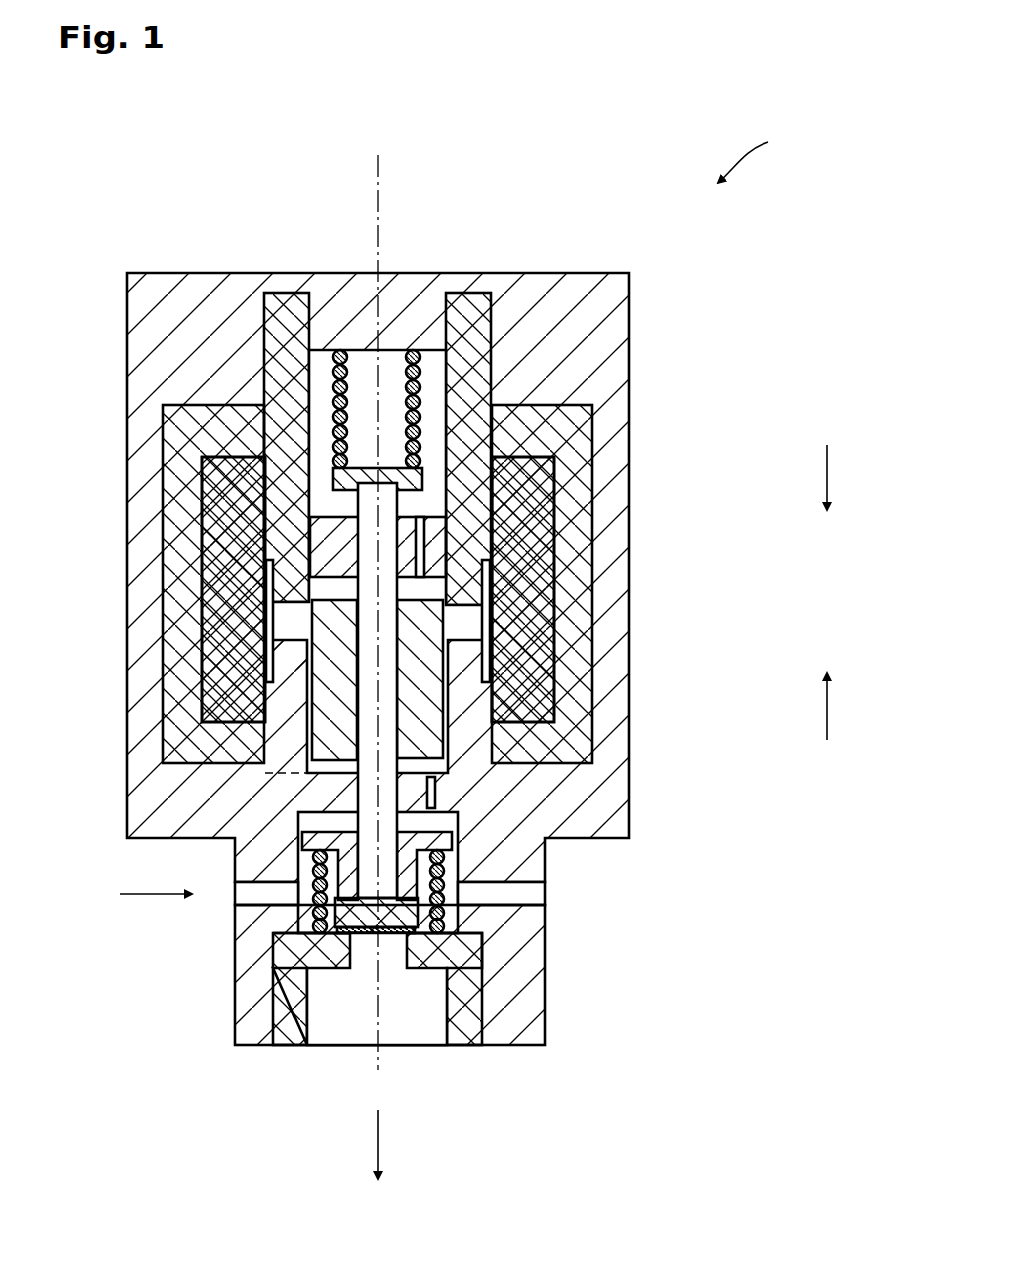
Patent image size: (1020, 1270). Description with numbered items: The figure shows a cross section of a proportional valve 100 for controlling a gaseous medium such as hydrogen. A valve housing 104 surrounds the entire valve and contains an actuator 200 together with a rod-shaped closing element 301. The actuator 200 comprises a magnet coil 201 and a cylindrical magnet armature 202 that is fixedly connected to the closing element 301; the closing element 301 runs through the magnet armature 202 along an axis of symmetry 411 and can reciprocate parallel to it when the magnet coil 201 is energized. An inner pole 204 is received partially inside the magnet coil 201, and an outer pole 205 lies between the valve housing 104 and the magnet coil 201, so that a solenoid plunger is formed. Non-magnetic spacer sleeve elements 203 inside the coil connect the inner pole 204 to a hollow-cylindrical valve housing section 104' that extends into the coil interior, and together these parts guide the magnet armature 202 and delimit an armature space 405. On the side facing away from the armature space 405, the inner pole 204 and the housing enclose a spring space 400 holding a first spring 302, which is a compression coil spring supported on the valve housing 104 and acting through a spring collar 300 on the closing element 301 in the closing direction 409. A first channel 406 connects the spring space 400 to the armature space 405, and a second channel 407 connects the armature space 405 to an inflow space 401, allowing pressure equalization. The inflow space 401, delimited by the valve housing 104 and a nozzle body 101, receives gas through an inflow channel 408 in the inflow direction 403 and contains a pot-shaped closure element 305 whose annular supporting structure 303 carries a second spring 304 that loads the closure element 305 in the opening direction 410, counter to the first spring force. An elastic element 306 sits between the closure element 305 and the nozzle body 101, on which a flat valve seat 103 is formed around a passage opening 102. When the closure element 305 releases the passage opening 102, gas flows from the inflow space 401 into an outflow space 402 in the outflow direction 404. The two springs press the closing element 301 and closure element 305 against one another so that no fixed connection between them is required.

The proportional valve 100 is at (769, 153).
The nozzle body 101 is at (292, 1035).
The passage opening 102 is at (360, 963).
The valve seat 103 is at (460, 955).
The valve housing 104 is at (333, 577).
The valve housing section 104' is at (379, 711).
The actuator 200 is at (488, 589).
The magnet coil 201 is at (535, 510).
The magnet armature 202 is at (420, 695).
The spacer sleeve elements 203 is at (270, 640).
The inner pole 204 is at (480, 386).
The outer pole 205 is at (585, 455).
The spring collar 300 is at (366, 470).
The closing element 301 is at (367, 792).
The first spring 302 is at (432, 375).
The supporting structure 303 is at (315, 848).
The second spring 304 is at (450, 855).
The closure element 305 is at (410, 915).
The elastic element 306 is at (388, 932).
The spring space 400 is at (332, 505).
The inflow space 401 is at (447, 840).
The outflow space 402 is at (425, 1008).
The inflow direction 403 is at (152, 896).
The outflow direction 404 is at (383, 1150).
The armature space 405 is at (327, 588).
The first channel 406 is at (420, 558).
The second channel 407 is at (430, 797).
The inflow channel 408 is at (243, 893).
The closing direction 409 is at (832, 478).
The opening direction 410 is at (832, 710).
The axis of symmetry 411 is at (392, 174).